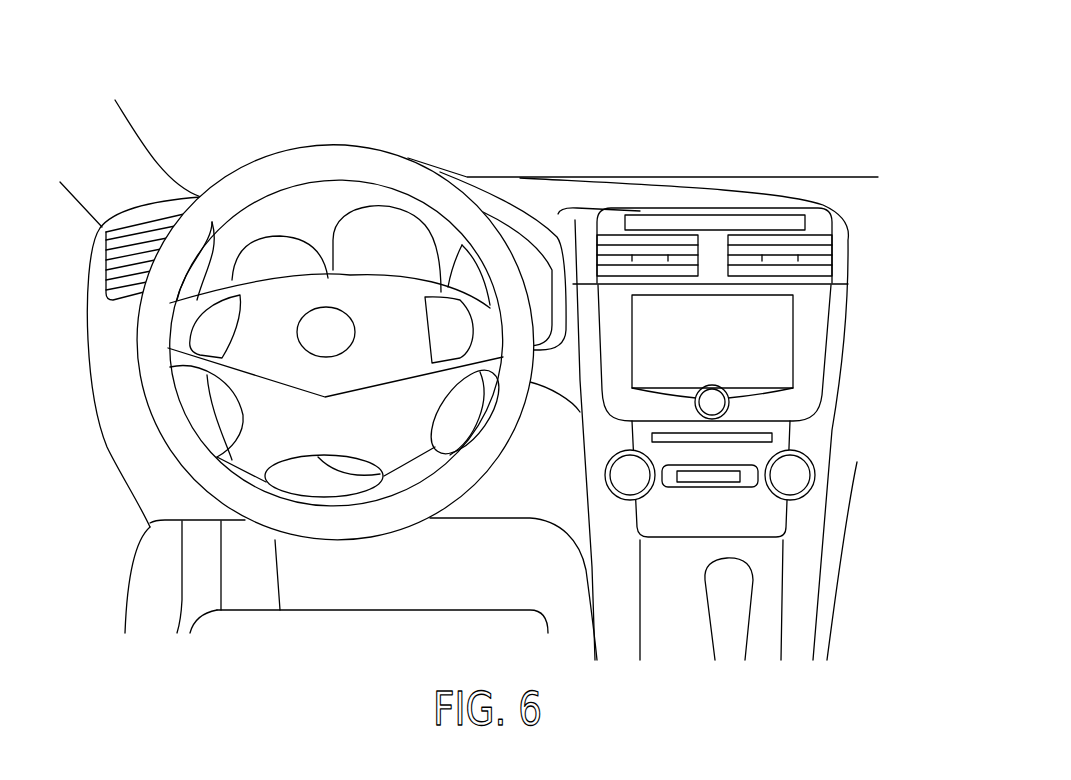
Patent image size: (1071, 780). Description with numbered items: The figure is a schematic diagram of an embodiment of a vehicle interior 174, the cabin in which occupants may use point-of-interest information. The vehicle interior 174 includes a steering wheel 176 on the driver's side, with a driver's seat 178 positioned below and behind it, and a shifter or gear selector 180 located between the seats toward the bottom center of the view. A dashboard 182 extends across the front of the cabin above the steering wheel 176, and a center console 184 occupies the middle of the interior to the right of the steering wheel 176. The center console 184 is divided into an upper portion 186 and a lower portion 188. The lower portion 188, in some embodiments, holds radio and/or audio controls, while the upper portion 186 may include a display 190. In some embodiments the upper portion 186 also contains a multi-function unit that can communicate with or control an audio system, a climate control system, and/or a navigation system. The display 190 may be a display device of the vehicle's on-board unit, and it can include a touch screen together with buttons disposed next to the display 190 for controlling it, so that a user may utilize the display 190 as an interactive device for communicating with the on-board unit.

The vehicle interior 174 is at (166, 72).
The steering wheel 176 is at (287, 167).
The driver's seat 178 is at (440, 580).
The shifter or gear selector 180 is at (723, 593).
The dashboard 182 is at (508, 198).
The center console 184 is at (842, 243).
The upper portion 186 is at (828, 352).
The lower portion 188 is at (803, 440).
The display 190 is at (730, 357).